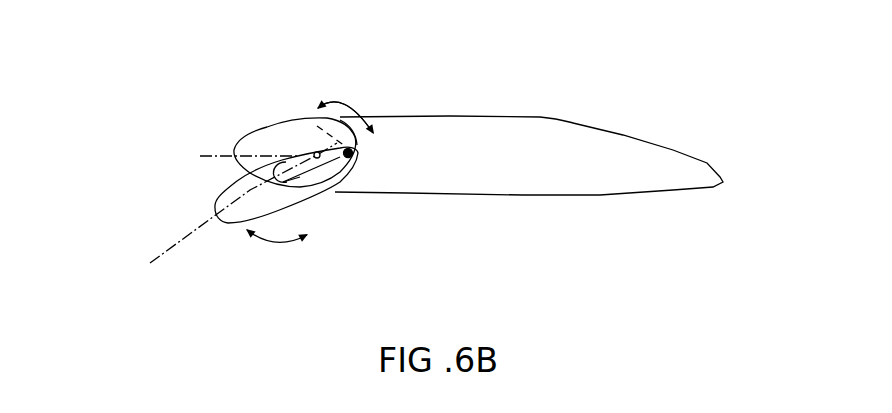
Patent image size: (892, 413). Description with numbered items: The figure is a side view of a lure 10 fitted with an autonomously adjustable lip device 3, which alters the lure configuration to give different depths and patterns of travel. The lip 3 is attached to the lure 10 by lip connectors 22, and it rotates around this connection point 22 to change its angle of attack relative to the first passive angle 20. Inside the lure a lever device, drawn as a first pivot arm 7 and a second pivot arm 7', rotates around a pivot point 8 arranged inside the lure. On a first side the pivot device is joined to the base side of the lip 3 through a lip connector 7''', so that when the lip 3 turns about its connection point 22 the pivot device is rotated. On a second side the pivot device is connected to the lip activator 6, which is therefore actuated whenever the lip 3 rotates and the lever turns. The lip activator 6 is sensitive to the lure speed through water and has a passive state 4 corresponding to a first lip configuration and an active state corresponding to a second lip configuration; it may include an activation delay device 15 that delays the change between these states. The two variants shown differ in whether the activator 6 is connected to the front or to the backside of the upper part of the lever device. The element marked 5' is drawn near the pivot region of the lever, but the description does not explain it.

The adjustable lip device 3 is at (224, 202).
The passive state 4 is at (270, 244).
The pivot axis 5' is at (367, 92).
The lip activator 6 is at (318, 107).
The activation delay device 15 is at (345, 117).
The first pivot arm 7 is at (323, 197).
The second pivot arm 7' is at (371, 186).
The lip connector 7''' is at (323, 221).
The pivot point 8 is at (315, 153).
The lure 10 is at (556, 106).
The first passive angle 20 is at (240, 157).
The lip connectors 22 is at (338, 124).